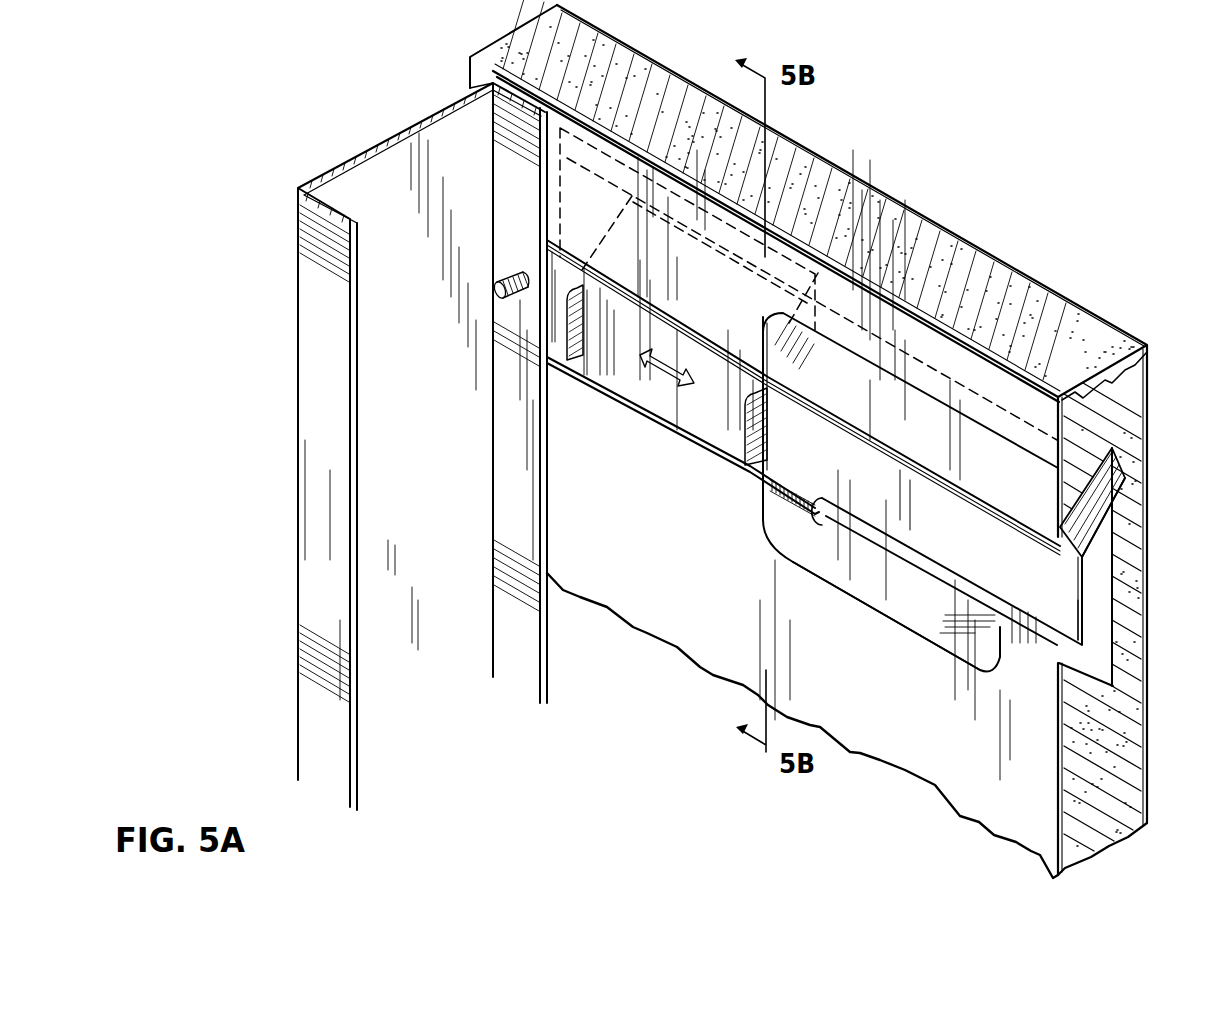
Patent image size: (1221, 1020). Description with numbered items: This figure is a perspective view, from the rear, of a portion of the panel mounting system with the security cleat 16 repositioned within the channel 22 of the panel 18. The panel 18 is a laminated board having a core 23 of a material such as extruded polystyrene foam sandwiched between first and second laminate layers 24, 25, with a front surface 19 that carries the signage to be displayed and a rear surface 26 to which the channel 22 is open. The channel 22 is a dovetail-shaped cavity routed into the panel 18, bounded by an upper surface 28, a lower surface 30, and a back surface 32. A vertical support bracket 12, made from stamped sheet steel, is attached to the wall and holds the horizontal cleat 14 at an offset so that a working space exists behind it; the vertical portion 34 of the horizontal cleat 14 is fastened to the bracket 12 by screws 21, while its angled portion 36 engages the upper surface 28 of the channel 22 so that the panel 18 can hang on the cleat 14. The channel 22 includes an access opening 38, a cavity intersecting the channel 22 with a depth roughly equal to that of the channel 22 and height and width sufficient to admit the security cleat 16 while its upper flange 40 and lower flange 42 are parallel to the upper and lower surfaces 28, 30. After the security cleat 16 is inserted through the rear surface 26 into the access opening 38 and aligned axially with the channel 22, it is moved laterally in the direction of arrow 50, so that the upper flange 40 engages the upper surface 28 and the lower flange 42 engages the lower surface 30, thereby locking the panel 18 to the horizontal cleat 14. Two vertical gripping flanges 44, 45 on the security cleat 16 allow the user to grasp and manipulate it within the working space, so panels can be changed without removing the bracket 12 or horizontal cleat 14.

The vertical support bracket 12 is at (350, 157).
The horizontal cleat 14 is at (864, 519).
The security cleat 16 is at (658, 397).
The panel 18 is at (901, 202).
The front surface 19 is at (1077, 307).
The screw 21 is at (494, 291).
The channel 22 is at (1094, 579).
The core 23 is at (527, 40).
The first laminate layer 24 is at (812, 152).
The second laminate layer 25 is at (469, 72).
The rear surface 26 is at (632, 593).
The upper surface 28 is at (1084, 488).
The lower surface 30 is at (1096, 670).
The back surface 32 is at (1058, 640).
The vertical portion 34 is at (991, 563).
The angled portion 36 is at (1102, 536).
The access opening 38 is at (897, 593).
The upper flange 40 is at (780, 362).
The lower flange 42 is at (780, 470).
The gripping flange 44 is at (752, 433).
The gripping flange 45 is at (562, 337).
The arrow 50 is at (655, 352).